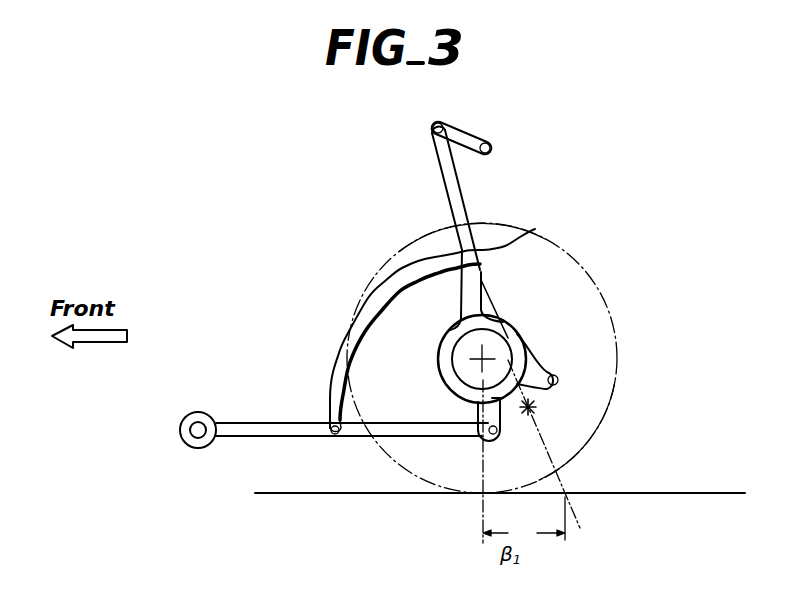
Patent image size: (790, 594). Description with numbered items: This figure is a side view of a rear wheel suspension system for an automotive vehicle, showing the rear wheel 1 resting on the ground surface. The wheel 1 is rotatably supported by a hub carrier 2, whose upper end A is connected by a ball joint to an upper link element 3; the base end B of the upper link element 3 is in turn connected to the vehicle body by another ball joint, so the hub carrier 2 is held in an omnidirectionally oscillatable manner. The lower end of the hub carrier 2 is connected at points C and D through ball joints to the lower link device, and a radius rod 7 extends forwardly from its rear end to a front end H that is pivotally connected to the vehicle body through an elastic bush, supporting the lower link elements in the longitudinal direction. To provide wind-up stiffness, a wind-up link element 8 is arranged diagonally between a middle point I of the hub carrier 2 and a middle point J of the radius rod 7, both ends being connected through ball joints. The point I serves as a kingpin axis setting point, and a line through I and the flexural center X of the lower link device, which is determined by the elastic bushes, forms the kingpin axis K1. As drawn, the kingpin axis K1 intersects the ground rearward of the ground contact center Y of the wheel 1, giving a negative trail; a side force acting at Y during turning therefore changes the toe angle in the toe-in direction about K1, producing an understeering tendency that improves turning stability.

The rear wheel 1 is at (600, 291).
The hub carrier 2 is at (461, 181).
The upper link element 3 is at (468, 130).
The radius rod 7 is at (258, 422).
The wind-up link element 8 is at (399, 268).
The upper end of the hub carrier A is at (432, 127).
The base end of the upper link element B is at (491, 145).
The connecting point on the lower end of the hub carrier C is at (559, 379).
The connecting point on the lower end of the hub carrier D is at (486, 440).
The front end of the radius rod H is at (180, 431).
The middle point of the hub carrier I is at (531, 228).
The middle point of the radius rod J is at (334, 437).
The flexural center X is at (534, 406).
The kingpin axis K1 is at (543, 441).
The ground contact center Y is at (478, 494).